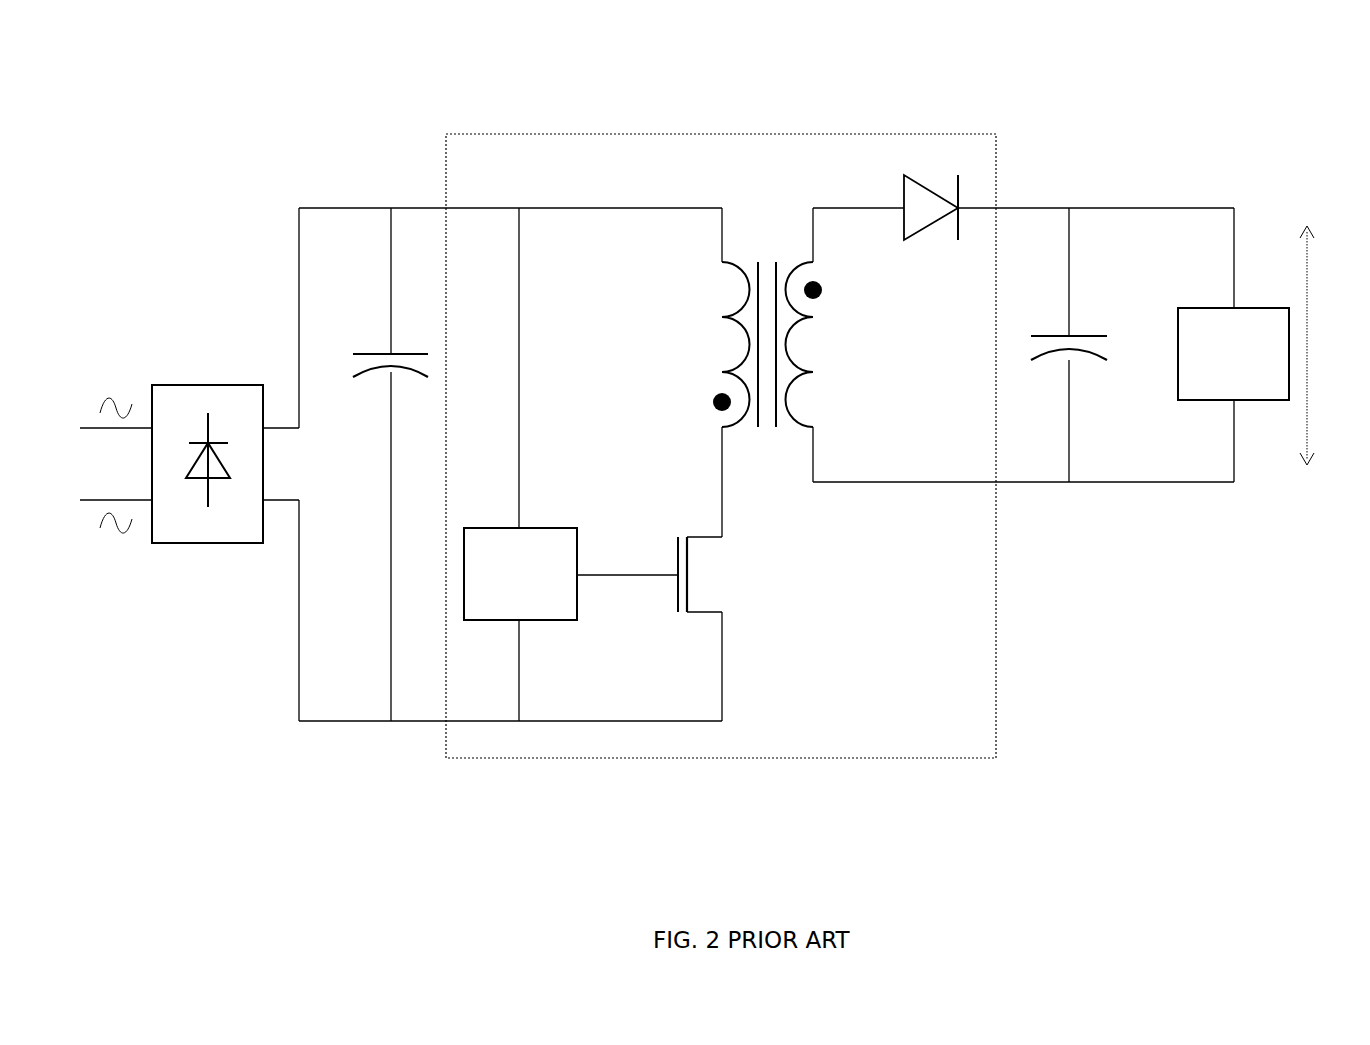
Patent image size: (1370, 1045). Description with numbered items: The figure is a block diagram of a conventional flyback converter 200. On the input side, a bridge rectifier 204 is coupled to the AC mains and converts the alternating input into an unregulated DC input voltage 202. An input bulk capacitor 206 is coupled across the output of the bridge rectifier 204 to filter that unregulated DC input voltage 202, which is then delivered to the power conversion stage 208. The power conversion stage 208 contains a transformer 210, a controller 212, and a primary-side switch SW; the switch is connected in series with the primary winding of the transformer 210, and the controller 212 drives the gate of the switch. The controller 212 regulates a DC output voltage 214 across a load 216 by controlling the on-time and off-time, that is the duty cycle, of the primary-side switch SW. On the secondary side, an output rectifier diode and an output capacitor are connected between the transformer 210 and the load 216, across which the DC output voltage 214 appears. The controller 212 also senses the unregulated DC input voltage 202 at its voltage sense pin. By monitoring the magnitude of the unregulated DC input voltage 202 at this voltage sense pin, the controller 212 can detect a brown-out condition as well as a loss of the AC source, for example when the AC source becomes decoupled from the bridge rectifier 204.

The flyback converter 200 is at (872, 84).
The unregulated DC input voltage 202 is at (417, 204).
The bridge rectifier 204 is at (190, 385).
The input bulk capacitor 206 is at (381, 464).
The power conversion stage 208 is at (625, 760).
The transformer 210 is at (777, 446).
The controller 212 is at (520, 574).
The DC output voltage 214 is at (1332, 344).
The load 216 is at (1233, 354).